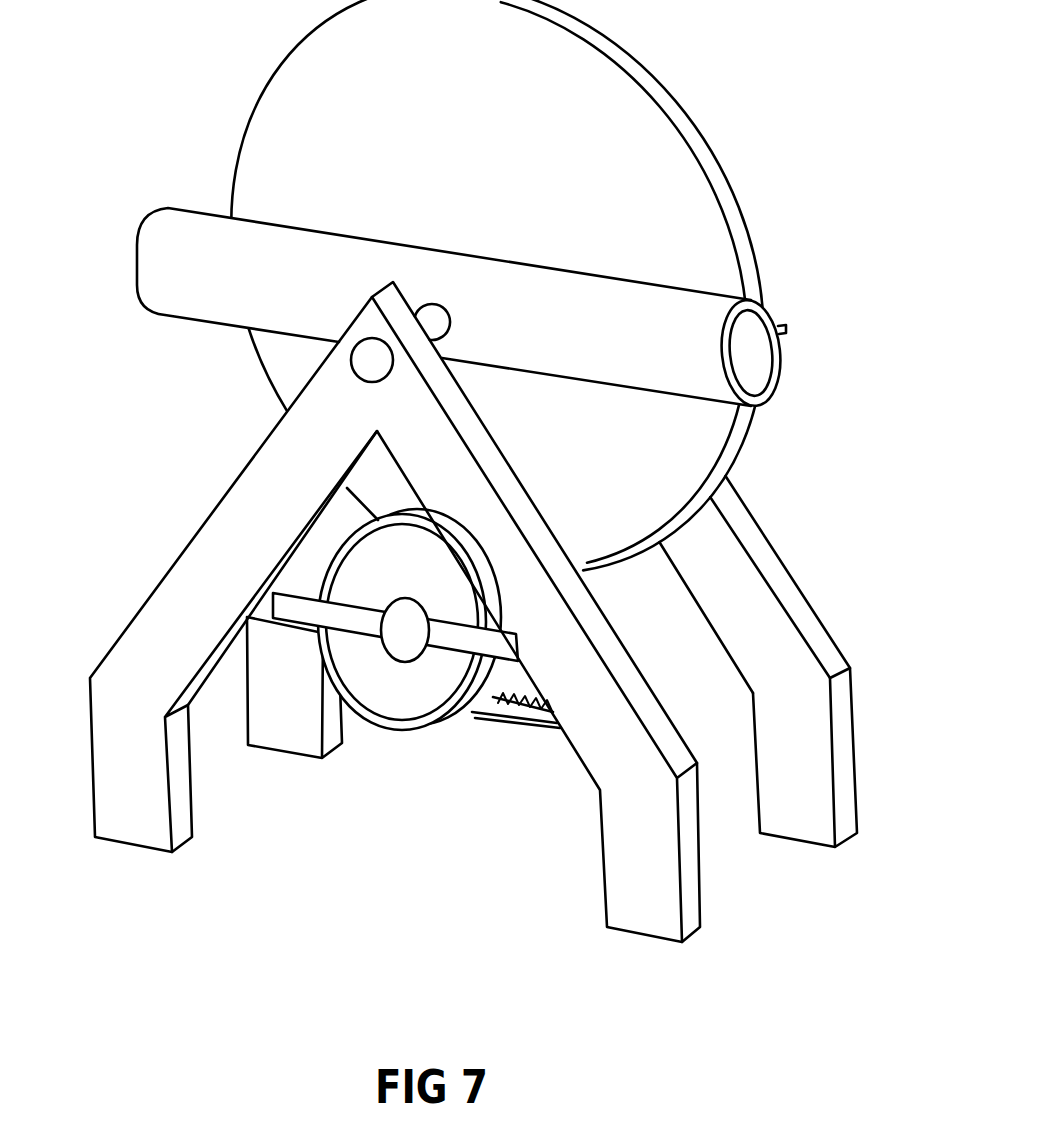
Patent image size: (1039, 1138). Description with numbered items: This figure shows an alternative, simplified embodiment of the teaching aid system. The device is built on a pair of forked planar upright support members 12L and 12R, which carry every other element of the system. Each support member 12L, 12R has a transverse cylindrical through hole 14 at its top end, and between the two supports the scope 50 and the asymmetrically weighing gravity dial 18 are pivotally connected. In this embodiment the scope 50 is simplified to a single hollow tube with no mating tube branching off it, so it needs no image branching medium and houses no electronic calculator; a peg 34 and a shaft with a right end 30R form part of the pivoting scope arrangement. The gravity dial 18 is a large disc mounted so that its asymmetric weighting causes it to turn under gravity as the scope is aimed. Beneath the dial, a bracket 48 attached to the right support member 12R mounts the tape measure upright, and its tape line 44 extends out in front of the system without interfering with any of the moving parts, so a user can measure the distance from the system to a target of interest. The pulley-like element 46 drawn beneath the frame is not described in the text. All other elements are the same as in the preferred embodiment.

The asymmetrically weighing gravity dial 18 is at (613, 122).
The scope 50 is at (197, 272).
The peg 34 is at (795, 323).
The right shaft end 30R is at (430, 322).
The transverse cylindrical through hole 14 is at (355, 377).
The right forked planar upright support member 12R is at (120, 803).
The left forked planar upright support member 12L is at (818, 808).
The pulley 46 is at (407, 702).
The bracket 48 is at (272, 605).
The tape line 44 is at (535, 712).